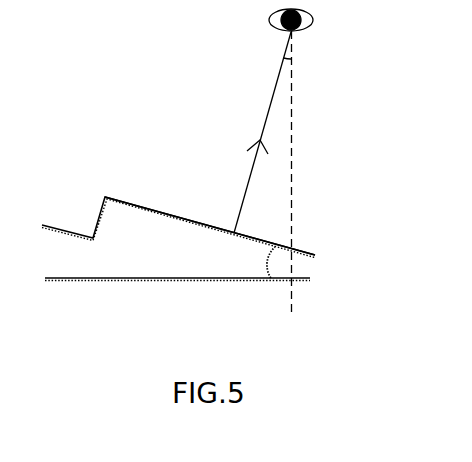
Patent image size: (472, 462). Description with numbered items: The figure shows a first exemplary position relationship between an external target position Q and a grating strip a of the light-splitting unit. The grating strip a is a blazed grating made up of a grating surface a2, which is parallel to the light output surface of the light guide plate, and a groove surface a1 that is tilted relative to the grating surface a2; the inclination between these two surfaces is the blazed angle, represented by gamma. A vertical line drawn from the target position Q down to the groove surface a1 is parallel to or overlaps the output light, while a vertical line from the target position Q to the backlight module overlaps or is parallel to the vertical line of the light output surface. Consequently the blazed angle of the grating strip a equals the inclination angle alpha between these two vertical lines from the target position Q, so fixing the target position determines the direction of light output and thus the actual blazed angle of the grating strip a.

The target position Q is at (302, 22).
The grating strip a is at (105, 197).
The groove surface a1 is at (160, 212).
The grating surface a2 is at (143, 280).